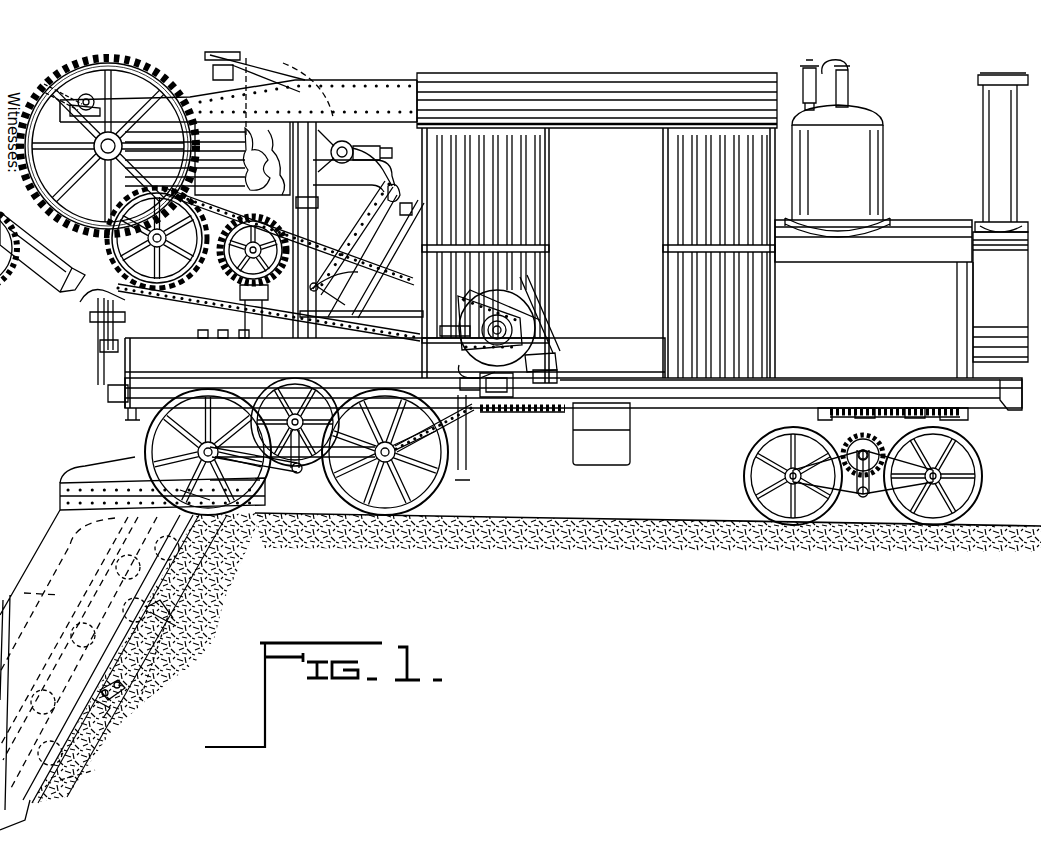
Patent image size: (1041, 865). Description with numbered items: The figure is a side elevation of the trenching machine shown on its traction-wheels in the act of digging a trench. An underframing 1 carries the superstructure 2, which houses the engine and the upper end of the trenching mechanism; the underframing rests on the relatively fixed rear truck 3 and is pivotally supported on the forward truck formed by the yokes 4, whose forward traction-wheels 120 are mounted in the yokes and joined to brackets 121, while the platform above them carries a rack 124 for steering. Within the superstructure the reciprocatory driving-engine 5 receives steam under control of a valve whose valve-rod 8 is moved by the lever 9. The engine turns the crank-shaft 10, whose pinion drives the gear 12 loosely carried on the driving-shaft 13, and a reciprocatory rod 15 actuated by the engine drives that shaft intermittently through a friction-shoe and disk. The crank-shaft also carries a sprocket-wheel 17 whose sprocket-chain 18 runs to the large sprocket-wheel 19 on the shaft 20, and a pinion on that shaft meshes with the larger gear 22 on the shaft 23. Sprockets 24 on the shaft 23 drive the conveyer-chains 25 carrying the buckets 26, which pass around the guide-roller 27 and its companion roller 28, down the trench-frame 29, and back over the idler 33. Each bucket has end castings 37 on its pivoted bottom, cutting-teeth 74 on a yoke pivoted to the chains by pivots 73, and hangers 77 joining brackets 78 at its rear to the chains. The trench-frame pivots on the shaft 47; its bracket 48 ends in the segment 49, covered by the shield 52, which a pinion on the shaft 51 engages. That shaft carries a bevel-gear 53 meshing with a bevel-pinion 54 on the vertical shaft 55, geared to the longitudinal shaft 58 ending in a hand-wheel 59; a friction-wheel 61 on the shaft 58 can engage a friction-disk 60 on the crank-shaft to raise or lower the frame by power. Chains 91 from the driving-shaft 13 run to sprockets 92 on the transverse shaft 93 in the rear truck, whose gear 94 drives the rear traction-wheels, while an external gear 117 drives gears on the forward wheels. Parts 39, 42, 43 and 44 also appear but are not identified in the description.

The underframing 1 is at (548, 393).
The superstructure 2 is at (565, 90).
The rear truck 3 is at (280, 486).
The forward truck 4 is at (865, 493).
The driving-engine 5 is at (22, 243).
The valve-rod 8 is at (470, 375).
The lever 9 is at (155, 365).
The crank-shaft 10 is at (517, 322).
The gear 12 is at (515, 405).
The driving-shaft 13 is at (547, 342).
The reciprocatory rod 15 is at (530, 288).
The sprocket-wheel 17 is at (517, 335).
The sprocket-chain 18 is at (368, 288).
The large sprocket-wheel 19 is at (45, 268).
The shaft 20 is at (94, 293).
The larger gear 22 is at (118, 62).
The shaft 23 is at (45, 70).
The sprockets 24 is at (150, 90).
The conveyer-chains 25 is at (350, 232).
The buckets 26 is at (85, 88).
The guide-roller 27 is at (95, 337).
The companion roller 28 is at (105, 398).
The trench-frame 29 is at (96, 670).
The idler 33 is at (360, 135).
The end castings 37 is at (315, 66).
The standard 39 is at (316, 210).
The hopper 42 is at (275, 122).
The hopper slats 43 is at (228, 140).
The chute 44 is at (244, 70).
The shaft 47 is at (200, 448).
The bracket 48 is at (100, 353).
The rack or segment 49 is at (92, 318).
The shaft 51 is at (325, 320).
The shield 52 is at (318, 292).
The bevel-gear 53 is at (203, 340).
The bevel-pinion 54 is at (222, 340).
The vertical shaft 55 is at (244, 340).
The longitudinally-extended shaft 58 is at (465, 331).
The hand-wheel 59 is at (105, 345).
The friction-disk 60 is at (555, 348).
The friction-wheel 61 is at (485, 326).
The pivots 73 is at (71, 146).
The cutting-teeth 74 is at (226, 135).
The hangers 77 is at (88, 88).
The brackets 78 is at (40, 85).
The chains 91 is at (470, 408).
The sprockets 92 is at (350, 423).
The transverse shaft 93 is at (300, 340).
The gear 94 is at (313, 492).
The external gear 117 is at (863, 451).
The forward traction-wheels 120 is at (743, 465).
The brackets 121 is at (818, 413).
The rack 124 is at (915, 410).